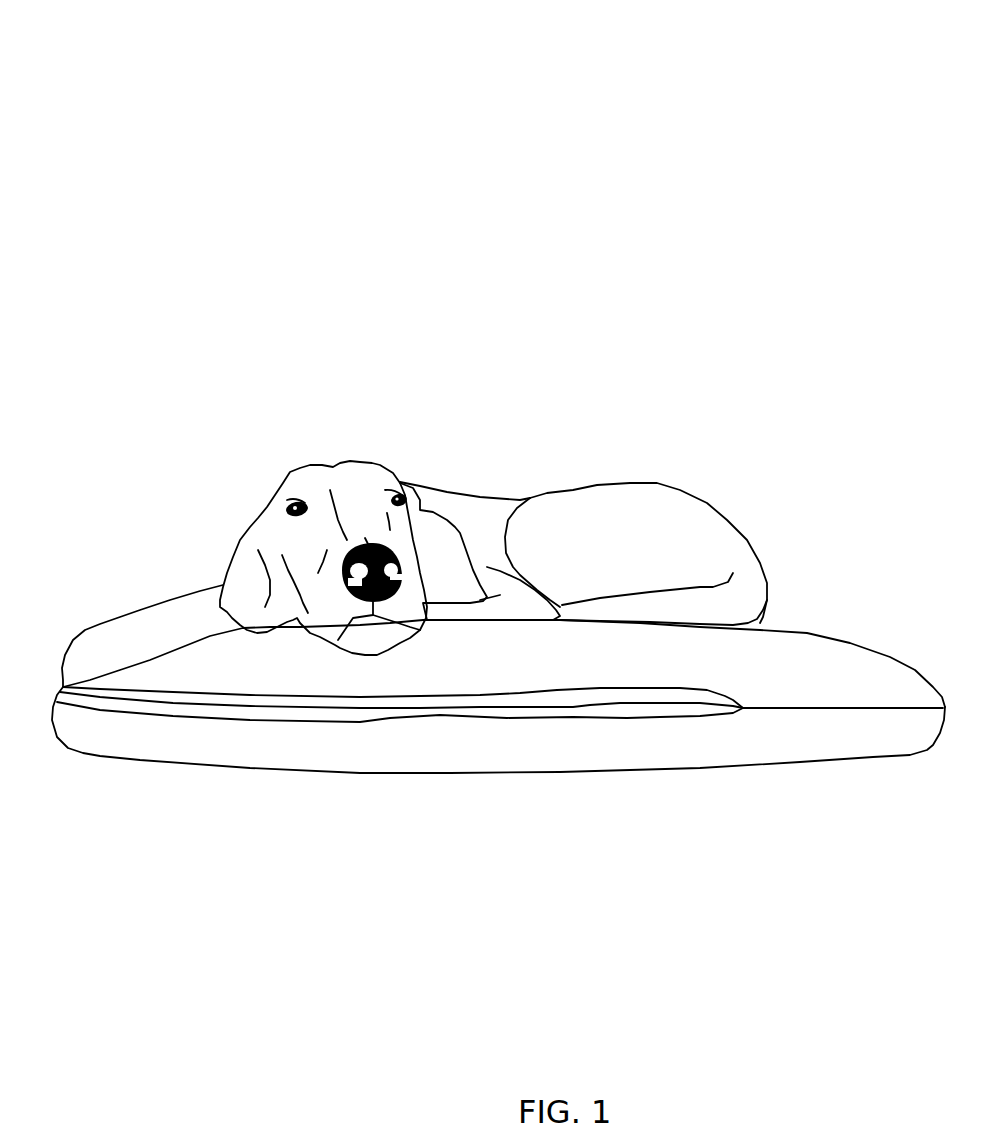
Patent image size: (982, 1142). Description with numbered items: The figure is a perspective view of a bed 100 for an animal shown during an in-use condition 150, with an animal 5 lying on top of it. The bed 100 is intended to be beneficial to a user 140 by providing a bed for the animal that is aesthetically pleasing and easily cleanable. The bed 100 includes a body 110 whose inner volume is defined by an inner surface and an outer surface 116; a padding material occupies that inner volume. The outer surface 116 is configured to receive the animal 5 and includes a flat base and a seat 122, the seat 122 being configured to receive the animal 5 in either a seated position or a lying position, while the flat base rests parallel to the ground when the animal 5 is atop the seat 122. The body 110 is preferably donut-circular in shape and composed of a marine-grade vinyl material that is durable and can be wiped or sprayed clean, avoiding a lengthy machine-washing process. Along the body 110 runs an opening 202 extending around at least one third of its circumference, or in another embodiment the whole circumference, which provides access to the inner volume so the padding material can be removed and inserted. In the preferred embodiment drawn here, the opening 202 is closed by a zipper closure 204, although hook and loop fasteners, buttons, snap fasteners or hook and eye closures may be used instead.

The animal 5 is at (638, 507).
The bed 100 is at (778, 80).
The body 110 is at (70, 768).
The outer surface 116 is at (842, 665).
The seat 122 is at (815, 632).
The user 140 is at (682, 513).
The in-use condition 150 is at (793, 115).
The opening 202 is at (667, 720).
The zipper closure 204 is at (585, 705).